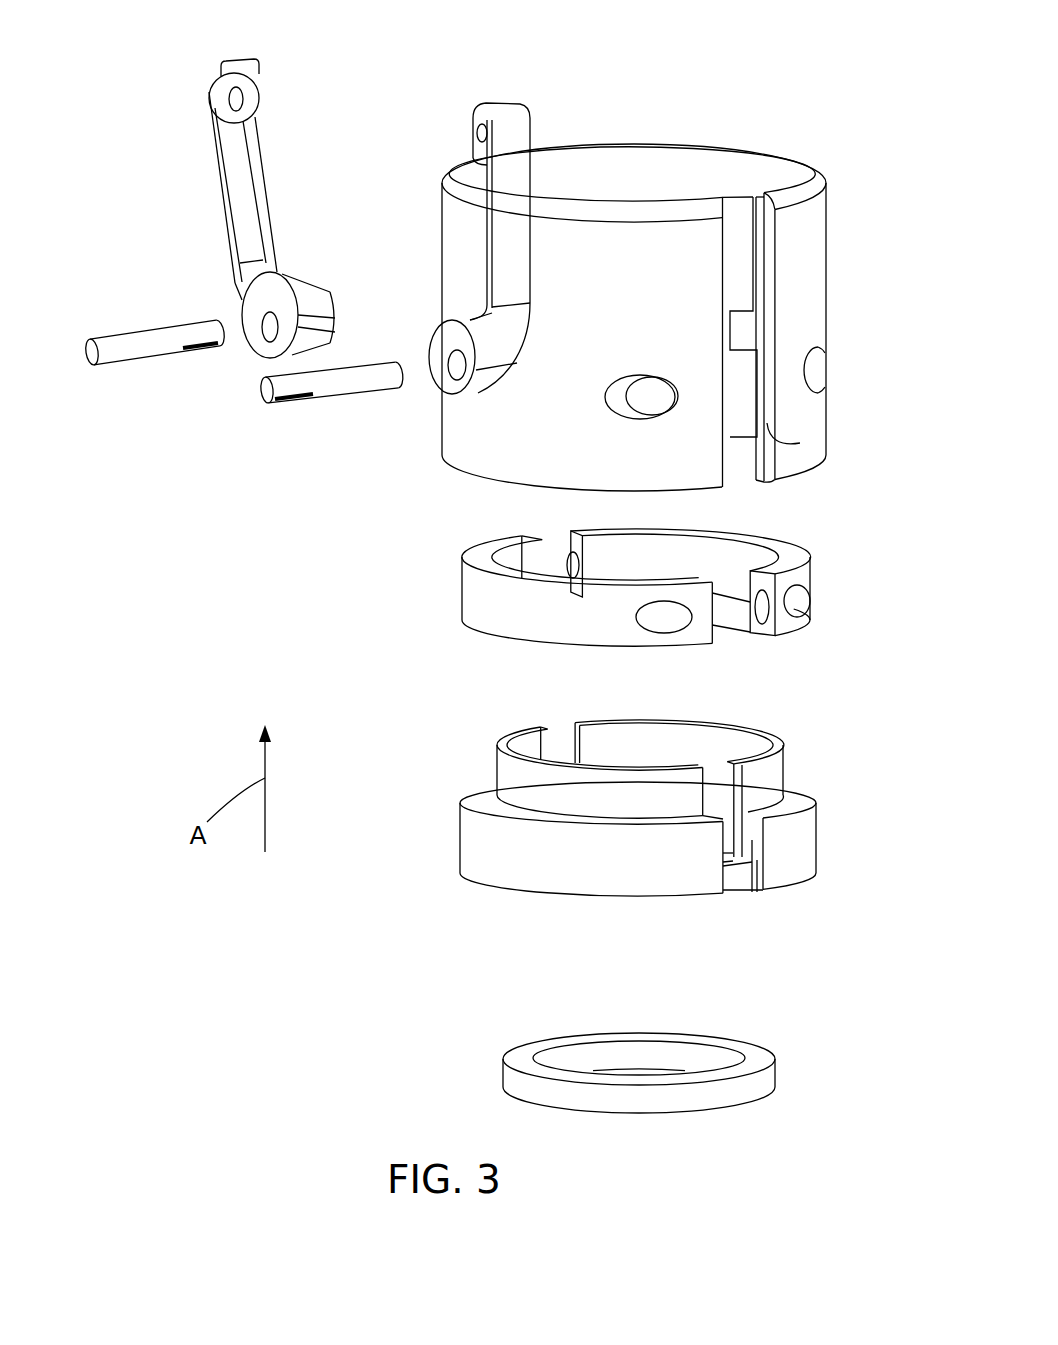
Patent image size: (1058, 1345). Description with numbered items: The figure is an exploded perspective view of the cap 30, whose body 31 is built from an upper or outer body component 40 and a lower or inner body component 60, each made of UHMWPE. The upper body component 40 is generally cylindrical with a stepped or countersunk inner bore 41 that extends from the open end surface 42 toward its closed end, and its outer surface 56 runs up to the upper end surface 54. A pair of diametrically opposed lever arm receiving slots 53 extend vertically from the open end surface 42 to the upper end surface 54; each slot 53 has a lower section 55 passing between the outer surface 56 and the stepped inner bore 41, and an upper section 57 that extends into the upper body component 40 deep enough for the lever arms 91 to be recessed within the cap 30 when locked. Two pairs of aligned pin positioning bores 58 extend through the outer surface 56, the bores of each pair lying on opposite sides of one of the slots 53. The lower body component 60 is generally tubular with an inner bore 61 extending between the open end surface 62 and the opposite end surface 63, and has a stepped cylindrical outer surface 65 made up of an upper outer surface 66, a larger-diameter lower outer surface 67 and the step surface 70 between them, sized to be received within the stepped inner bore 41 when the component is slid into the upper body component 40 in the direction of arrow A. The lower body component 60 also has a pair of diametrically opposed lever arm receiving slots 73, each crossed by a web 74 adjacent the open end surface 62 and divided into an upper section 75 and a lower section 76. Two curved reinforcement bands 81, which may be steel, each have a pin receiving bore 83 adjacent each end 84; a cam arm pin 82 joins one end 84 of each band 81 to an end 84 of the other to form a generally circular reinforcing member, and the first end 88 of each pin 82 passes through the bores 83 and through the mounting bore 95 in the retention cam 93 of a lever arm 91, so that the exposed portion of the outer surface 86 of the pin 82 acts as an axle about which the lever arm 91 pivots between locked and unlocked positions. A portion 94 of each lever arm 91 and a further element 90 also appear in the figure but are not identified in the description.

The cap 30 is at (742, 100).
The body 31 is at (782, 116).
The upper body component 40 is at (812, 270).
The stepped inner bore 41 is at (751, 405).
The open end surface 42 is at (792, 482).
The lever arm receiving slots 53 is at (739, 462).
The upper end surface 54 is at (653, 170).
The lower section 55 is at (800, 443).
The outer surface 56 is at (813, 230).
The upper section 57 is at (768, 247).
The pin positioning bores 58 is at (610, 385).
The lower body component 60 is at (800, 862).
The inner bore 61 is at (632, 735).
The open end surface 62 is at (575, 900).
The opposite end surface 63 is at (505, 735).
The stepped cylindrical outer surface 65 is at (812, 800).
The upper outer surface 66 is at (765, 765).
The lower outer surface 67 is at (797, 850).
The step surface 70 is at (478, 797).
The lever arm receiving slots 73 is at (559, 726).
The web 74 is at (733, 882).
The upper section 75 is at (735, 773).
The lower section 76 is at (750, 842).
The reinforcement band 81 is at (790, 552).
The cam arm pin 82 is at (260, 392).
The pin receiving bores 83 is at (568, 562).
The end 84 is at (562, 537).
The outer surface 86 is at (147, 343).
The first end 88 is at (187, 325).
The washer 90 is at (703, 1088).
The lever arm 91 is at (492, 227).
The retention cam 93 is at (260, 290).
The boss 94 is at (310, 293).
The mounting bore 95 is at (266, 332).